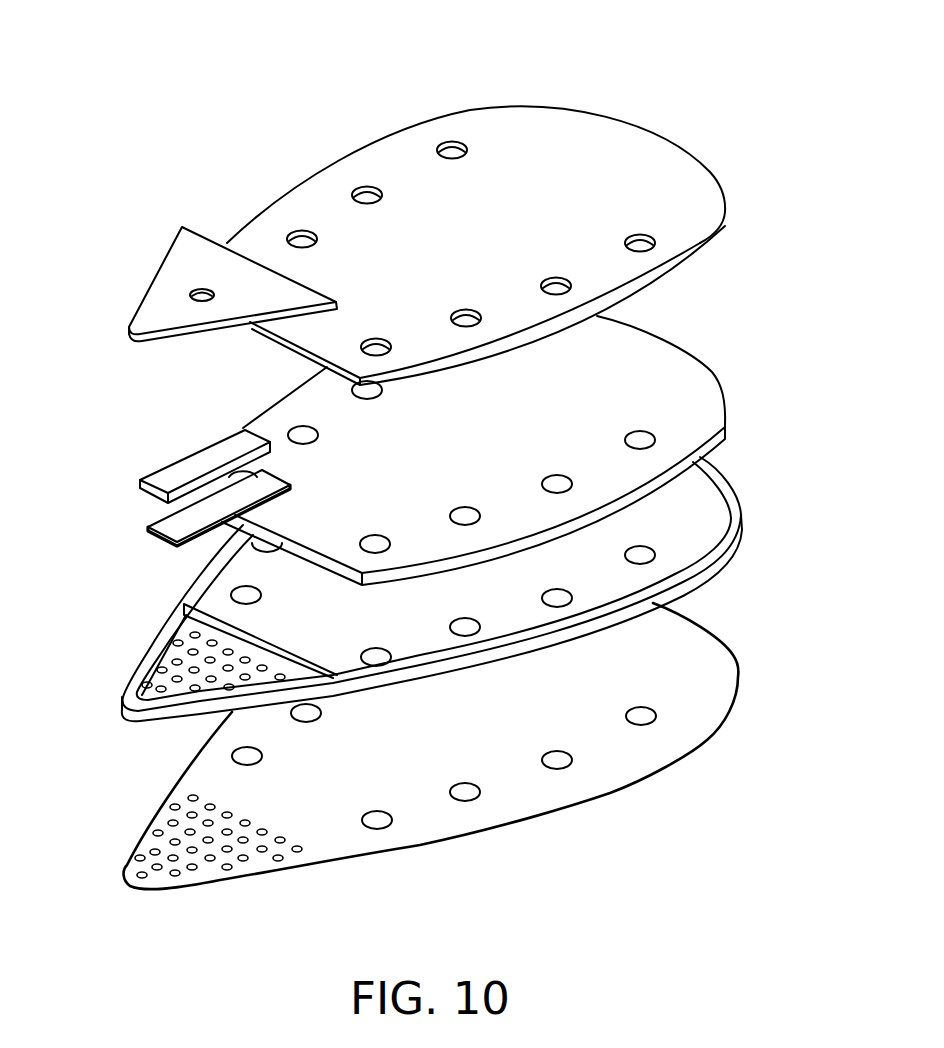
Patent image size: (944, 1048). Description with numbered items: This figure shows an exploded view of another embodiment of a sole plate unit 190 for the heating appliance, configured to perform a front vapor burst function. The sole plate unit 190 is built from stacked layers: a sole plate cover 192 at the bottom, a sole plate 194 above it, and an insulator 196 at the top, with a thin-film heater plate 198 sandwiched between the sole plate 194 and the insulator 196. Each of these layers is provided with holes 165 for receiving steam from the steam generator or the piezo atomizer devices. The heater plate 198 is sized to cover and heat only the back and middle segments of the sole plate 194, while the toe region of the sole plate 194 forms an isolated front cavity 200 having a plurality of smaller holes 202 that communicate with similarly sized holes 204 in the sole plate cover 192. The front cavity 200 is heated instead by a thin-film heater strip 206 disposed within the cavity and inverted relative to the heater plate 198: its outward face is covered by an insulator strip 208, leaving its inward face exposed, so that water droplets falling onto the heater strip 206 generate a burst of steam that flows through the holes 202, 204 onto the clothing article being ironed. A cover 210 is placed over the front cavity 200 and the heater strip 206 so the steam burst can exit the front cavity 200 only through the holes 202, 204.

The sole plate unit 190 is at (256, 62).
The sole plate cover 192 is at (417, 746).
The sole plate 194 is at (426, 582).
The insulator 196 is at (678, 148).
The thin-film heater plate 198 is at (693, 354).
The front cavity 200 is at (143, 688).
The smaller holes 202 is at (190, 634).
The holes 204 is at (158, 831).
The thin-film heater strip 206 is at (160, 477).
The insulator strip 208 is at (155, 527).
The cover 210 is at (165, 258).
The holes 165 is at (195, 294).